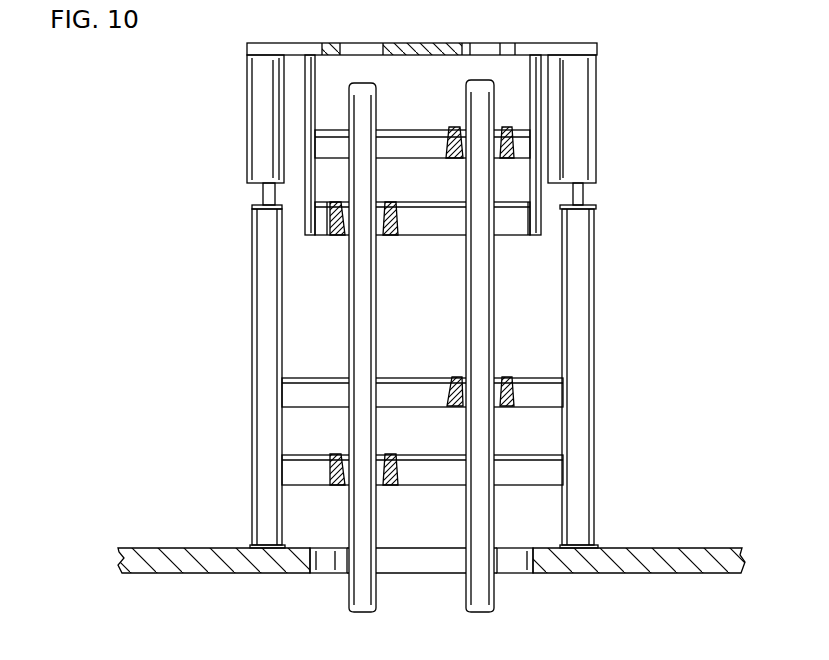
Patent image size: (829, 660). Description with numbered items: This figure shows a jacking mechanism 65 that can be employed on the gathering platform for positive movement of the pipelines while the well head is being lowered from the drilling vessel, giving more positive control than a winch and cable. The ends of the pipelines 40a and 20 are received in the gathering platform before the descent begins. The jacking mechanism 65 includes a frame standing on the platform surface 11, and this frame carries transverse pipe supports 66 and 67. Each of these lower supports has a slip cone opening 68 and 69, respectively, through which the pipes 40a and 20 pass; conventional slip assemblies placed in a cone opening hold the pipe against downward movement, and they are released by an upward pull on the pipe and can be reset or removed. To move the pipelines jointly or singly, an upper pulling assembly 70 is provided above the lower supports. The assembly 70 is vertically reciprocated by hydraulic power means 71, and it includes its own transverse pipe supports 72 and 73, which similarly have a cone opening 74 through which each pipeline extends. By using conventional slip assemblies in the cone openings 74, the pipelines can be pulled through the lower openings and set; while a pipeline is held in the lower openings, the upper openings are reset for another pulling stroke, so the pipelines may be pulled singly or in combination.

The platform surface 11 is at (172, 548).
The pipeline 20 is at (497, 598).
The pipeline 40a is at (348, 600).
The jacking mechanism 65 is at (598, 296).
The transverse pipe support 66 is at (542, 486).
The transverse pipe support 67 is at (300, 393).
The slip cone opening 68 is at (387, 460).
The slip cone opening 69 is at (503, 380).
The upper pulling assembly 70 is at (541, 191).
The hydraulic power means 71 is at (248, 115).
The transverse pipe support 72 is at (323, 222).
The transverse pipe support 73 is at (323, 147).
The cone opening 74 is at (503, 128).